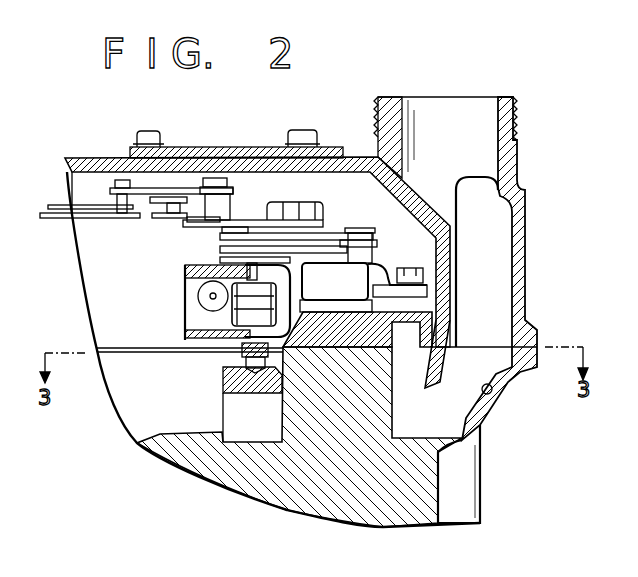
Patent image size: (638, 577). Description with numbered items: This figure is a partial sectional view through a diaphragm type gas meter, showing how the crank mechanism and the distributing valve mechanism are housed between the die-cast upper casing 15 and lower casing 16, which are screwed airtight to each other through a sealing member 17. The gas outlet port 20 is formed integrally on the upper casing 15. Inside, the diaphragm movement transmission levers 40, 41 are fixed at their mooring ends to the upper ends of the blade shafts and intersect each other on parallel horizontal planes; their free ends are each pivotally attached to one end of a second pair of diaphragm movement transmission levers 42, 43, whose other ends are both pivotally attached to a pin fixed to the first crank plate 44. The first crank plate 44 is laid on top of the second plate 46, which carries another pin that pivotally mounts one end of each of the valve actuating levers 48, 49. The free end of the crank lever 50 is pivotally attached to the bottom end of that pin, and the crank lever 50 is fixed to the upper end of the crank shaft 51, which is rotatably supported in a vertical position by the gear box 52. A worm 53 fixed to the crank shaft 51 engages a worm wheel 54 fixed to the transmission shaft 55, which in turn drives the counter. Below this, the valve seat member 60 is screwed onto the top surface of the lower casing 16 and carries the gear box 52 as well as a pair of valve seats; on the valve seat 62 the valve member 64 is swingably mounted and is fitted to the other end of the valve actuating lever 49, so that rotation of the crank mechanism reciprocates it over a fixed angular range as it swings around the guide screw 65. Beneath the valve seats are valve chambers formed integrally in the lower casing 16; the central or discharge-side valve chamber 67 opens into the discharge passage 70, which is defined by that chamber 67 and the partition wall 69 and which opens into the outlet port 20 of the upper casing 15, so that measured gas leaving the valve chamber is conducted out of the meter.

The upper casing 15 is at (258, 156).
The lower casing 16 is at (383, 514).
The sealing member 17 is at (135, 353).
The gas outlet port 20 is at (490, 100).
The diaphragm movement transmission lever 40 is at (43, 207).
The diaphragm movement transmission lever 41 is at (70, 192).
The diaphragm movement transmission lever 42 is at (208, 178).
The diaphragm movement transmission lever 43 is at (183, 190).
The first crank plate 44 is at (242, 218).
The second plate 46 is at (280, 213).
The valve actuating lever 48 is at (336, 287).
The valve actuating lever 49 is at (343, 232).
The crank lever 50 is at (220, 255).
The crank shaft 51 is at (221, 358).
The gear box 52 is at (195, 345).
The worm 53 is at (285, 332).
The worm wheel 54 is at (198, 295).
The transmission shaft 55 is at (187, 271).
The valve seat member 60 is at (299, 437).
The valve seat 62 is at (347, 310).
The valve member 64 is at (389, 262).
The guide screw 65 is at (415, 269).
The discharge-side valve chamber 67 is at (390, 391).
The partition wall 69 is at (438, 377).
The discharge passage 70 is at (492, 394).